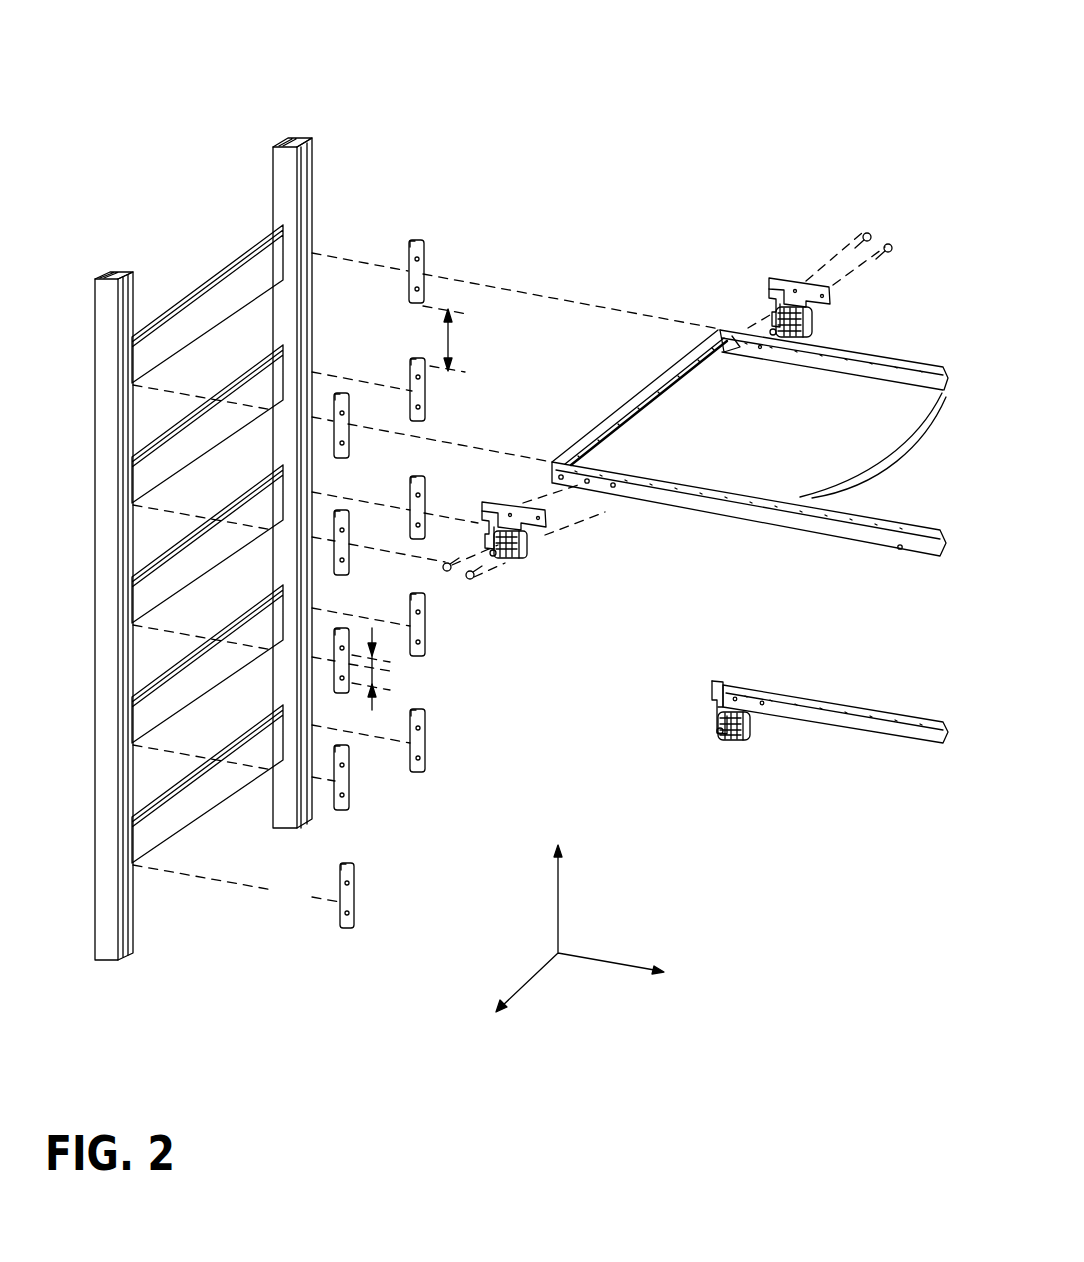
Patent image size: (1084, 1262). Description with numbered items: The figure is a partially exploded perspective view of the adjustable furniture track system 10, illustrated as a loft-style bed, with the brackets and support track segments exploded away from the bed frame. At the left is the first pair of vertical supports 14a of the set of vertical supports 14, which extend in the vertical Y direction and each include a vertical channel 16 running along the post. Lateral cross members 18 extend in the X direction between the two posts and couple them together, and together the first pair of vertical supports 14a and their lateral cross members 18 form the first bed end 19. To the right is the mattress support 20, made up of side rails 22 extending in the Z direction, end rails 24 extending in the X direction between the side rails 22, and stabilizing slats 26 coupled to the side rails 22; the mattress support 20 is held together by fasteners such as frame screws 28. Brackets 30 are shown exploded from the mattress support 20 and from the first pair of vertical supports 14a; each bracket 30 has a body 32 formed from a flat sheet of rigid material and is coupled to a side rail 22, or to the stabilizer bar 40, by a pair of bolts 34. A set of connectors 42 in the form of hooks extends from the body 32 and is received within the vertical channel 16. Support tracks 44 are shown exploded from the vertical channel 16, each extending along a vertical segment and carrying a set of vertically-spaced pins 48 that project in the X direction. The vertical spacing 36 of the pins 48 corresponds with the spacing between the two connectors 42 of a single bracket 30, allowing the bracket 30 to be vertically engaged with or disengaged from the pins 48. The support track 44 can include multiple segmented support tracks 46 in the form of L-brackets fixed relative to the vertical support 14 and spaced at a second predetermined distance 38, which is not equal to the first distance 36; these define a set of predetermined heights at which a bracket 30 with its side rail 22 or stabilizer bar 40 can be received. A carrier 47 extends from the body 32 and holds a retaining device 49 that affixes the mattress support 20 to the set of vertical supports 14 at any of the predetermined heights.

The adjustable furniture track system 10 is at (641, 44).
The set of vertical supports 14 is at (302, 126).
The first pair of vertical supports 14a is at (282, 142).
The vertical channel 16 is at (307, 188).
The lateral cross member 18 is at (215, 795).
The first bed end 19 is at (726, 360).
The mattress support 20 is at (659, 510).
The side rail 22 is at (820, 364).
The end rail 24 is at (645, 398).
The stabilizing slat 26 is at (893, 450).
The frame screw 28 is at (806, 497).
The bracket 30 is at (762, 264).
The body 32 is at (784, 278).
The bolt 34 is at (892, 244).
The vertical spacing 36 is at (375, 668).
The second predetermined distance 38 is at (452, 344).
The stabilizer bar 40 is at (857, 722).
The connector 42 is at (773, 310).
The support track 44 is at (428, 258).
The segmented support track 46 is at (352, 873).
The carrier 47 is at (775, 334).
The vertically-spaced pin 48 is at (350, 912).
The retaining device 49 is at (812, 325).